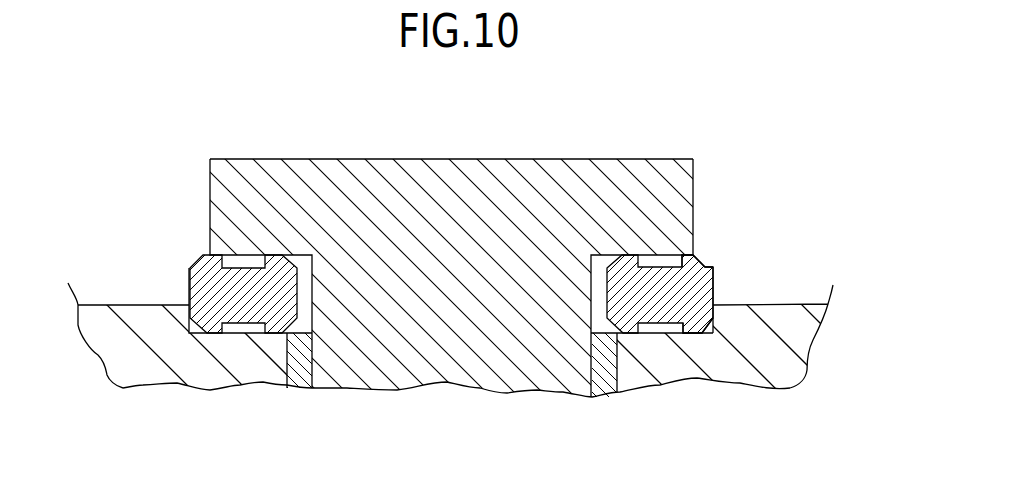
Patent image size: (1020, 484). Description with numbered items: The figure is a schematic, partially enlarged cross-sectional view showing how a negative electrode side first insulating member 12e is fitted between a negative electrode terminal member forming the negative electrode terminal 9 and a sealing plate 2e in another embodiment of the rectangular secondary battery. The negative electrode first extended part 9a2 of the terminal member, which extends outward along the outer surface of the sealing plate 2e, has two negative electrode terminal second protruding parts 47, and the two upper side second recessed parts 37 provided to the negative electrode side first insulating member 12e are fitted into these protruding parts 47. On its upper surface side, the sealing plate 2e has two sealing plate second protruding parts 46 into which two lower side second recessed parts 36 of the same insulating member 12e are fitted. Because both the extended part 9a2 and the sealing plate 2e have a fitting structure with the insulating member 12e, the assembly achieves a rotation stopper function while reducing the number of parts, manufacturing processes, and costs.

The negative electrode terminal 9 is at (463, 189).
The negative electrode first extended part 9a2 is at (660, 169).
The negative electrode terminal second protruding part 47 is at (647, 262).
The upper side second recessed part 37 is at (676, 262).
The negative electrode side first insulating member 12e is at (716, 286).
The lower side second recessed part 36 is at (663, 326).
The sealing plate 2e is at (803, 347).
The sealing plate second protruding part 46 is at (650, 332).